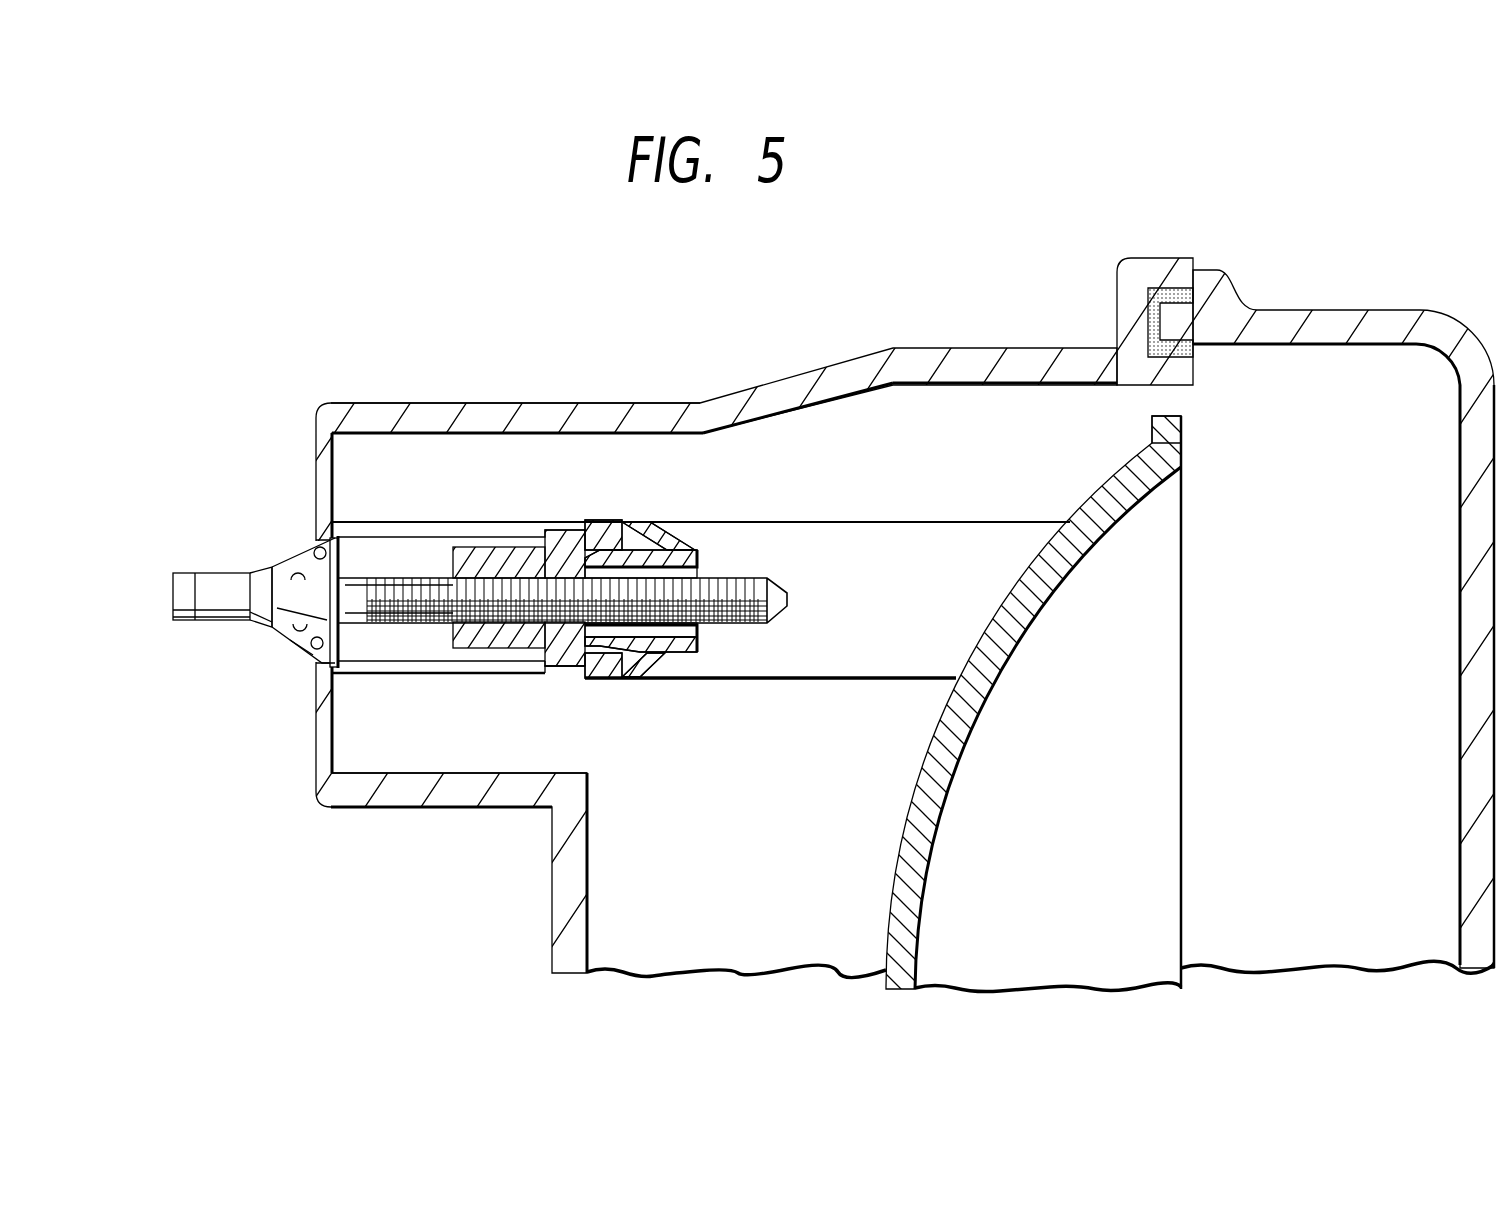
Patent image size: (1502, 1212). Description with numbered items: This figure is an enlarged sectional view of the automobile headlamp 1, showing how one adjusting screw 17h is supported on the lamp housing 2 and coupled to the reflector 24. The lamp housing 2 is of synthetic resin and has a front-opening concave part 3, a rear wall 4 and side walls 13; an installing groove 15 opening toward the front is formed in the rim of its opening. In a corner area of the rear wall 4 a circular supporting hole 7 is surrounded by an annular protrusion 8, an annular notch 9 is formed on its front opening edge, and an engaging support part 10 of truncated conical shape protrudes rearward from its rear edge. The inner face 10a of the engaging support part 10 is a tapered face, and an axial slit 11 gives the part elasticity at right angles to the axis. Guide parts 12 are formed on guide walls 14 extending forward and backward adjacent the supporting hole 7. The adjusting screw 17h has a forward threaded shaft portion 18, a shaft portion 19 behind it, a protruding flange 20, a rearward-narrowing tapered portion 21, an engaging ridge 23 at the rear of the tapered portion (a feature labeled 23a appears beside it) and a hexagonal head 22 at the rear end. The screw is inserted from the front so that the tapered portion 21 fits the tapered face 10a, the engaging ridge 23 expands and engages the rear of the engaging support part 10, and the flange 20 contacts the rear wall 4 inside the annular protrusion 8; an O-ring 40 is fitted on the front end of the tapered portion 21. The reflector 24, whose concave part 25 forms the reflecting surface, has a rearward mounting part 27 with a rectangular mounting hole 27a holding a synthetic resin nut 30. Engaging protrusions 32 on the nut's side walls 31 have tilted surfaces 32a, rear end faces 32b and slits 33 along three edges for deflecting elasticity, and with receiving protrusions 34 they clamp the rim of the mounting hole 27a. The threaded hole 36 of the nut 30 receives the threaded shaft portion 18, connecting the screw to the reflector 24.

The automobile headlamp 1 is at (1310, 277).
The lamp housing 2 is at (553, 880).
The concave part 3 is at (1032, 382).
The rear wall 4 is at (580, 915).
The supporting holes 7 is at (285, 572).
The annular protrusions 8 is at (348, 538).
The notches 9 is at (288, 655).
The engaging support parts 10 is at (295, 560).
The inner faces 10a is at (270, 573).
The slit 11 is at (300, 655).
The guide parts 12 is at (403, 520).
The side walls 13 is at (548, 465).
The guide walls 14 is at (436, 527).
The installing groove 15 is at (1157, 300).
The adjusting screw 17h is at (790, 578).
The threaded shaft portion 18 is at (748, 648).
The shaft portion 19 is at (380, 615).
The flange 20 is at (355, 620).
The tapered portion 21 is at (272, 640).
The head 22 is at (185, 578).
The engaging ridge 23 is at (258, 585).
The tapered surface 23a is at (247, 615).
The reflector 24 is at (888, 888).
The concave part 25 is at (1177, 548).
The mounting parts 27 is at (885, 535).
The mounting holes 27a is at (605, 523).
The nut 30 is at (540, 668).
The side walls 31 is at (680, 556).
The engaging protrusions 32 is at (655, 543).
The tilted surfaces 32a is at (655, 522).
The rear end faces 32b is at (610, 520).
The slits 33 is at (700, 570).
The receiving protrusions 34 is at (566, 540).
The threaded hole 36 is at (515, 575).
The O-ring 40 is at (318, 548).